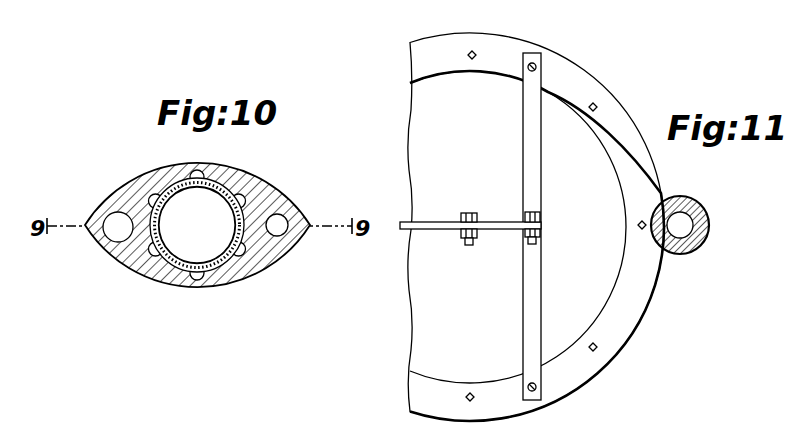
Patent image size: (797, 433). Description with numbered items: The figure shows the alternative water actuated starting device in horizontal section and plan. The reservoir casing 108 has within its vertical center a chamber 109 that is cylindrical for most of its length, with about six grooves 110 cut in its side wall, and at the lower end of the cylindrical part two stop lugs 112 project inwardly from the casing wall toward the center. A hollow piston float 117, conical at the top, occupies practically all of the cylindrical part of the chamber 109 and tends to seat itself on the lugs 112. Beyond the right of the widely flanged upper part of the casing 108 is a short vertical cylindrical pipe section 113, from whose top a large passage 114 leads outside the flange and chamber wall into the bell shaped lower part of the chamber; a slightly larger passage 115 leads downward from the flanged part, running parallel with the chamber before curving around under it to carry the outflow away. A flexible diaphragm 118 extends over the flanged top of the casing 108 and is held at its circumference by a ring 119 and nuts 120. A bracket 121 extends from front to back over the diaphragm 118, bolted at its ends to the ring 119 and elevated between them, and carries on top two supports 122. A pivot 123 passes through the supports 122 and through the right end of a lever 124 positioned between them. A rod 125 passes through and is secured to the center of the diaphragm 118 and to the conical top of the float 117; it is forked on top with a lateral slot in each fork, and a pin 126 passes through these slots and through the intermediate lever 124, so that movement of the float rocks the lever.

In FIG. 10, the reservoir casing 108 is at (143, 176).
In FIG. 10, the chamber 109 is at (220, 268).
In FIG. 10, the grooves 110 is at (157, 250).
In FIG. 10, the stop lugs 112 is at (230, 225).
In FIG. 11, the vertical cylindrical pipe section 113 is at (703, 222).
In FIG. 10, the large passage 114 is at (279, 230).
In FIG. 10, the passage 115 is at (114, 232).
In FIG. 10, the hollow piston float 117 is at (207, 200).
In FIG. 11, the flexible diaphragm 118 is at (427, 312).
In FIG. 11, the ring 119 is at (627, 330).
In FIG. 11, the nuts 120 is at (476, 53).
In FIG. 11, the bracket 121 is at (530, 173).
In FIG. 11, the supports 122 is at (541, 233).
In FIG. 11, the pivot 123 is at (537, 212).
In FIG. 11, the lever 124 is at (445, 230).
In FIG. 11, the rod 125 is at (477, 213).
In FIG. 11, the pin 126 is at (469, 213).